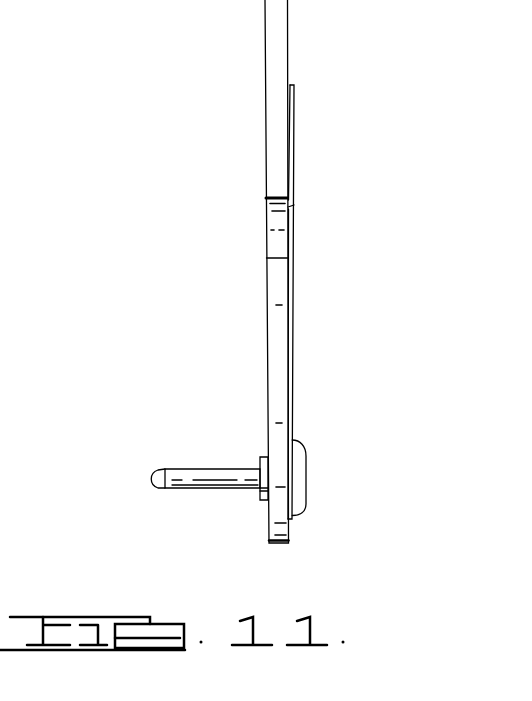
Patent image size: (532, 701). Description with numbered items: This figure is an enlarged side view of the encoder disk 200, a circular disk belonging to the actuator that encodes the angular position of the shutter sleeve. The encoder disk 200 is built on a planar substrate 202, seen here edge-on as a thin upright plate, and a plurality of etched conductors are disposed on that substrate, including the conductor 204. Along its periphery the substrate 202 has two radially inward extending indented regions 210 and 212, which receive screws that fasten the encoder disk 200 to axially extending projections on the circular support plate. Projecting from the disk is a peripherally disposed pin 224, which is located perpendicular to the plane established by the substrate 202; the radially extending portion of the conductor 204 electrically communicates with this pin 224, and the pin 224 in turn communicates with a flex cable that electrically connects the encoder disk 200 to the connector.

The encoder disk 200 is at (261, 43).
The planar substrate 202 is at (272, 110).
The etched conductor 204 is at (0, 275).
The indented region 210 is at (12, 332).
The indented region 212 is at (273, 247).
The pin 224 is at (181, 474).